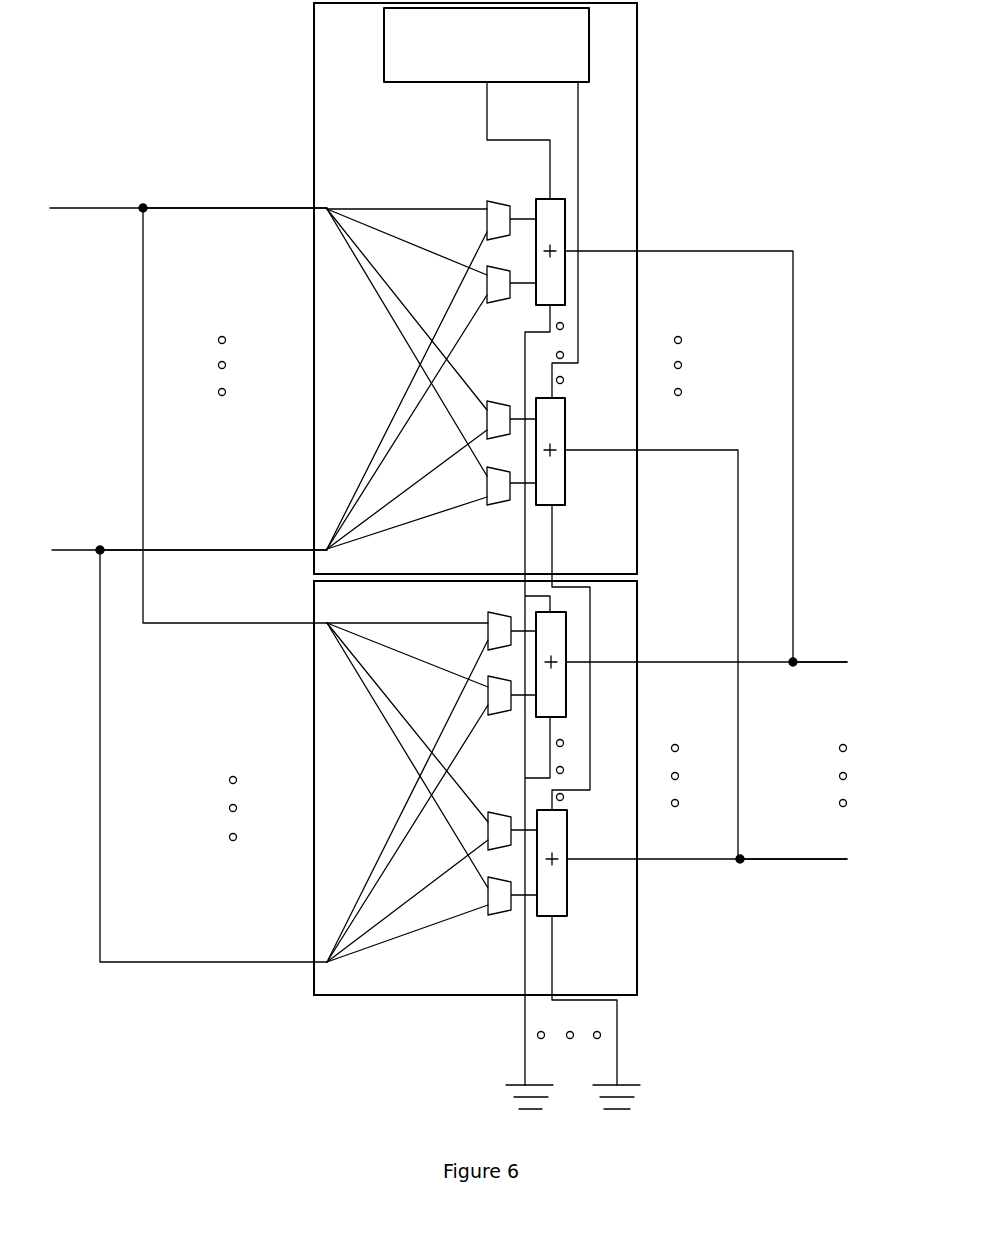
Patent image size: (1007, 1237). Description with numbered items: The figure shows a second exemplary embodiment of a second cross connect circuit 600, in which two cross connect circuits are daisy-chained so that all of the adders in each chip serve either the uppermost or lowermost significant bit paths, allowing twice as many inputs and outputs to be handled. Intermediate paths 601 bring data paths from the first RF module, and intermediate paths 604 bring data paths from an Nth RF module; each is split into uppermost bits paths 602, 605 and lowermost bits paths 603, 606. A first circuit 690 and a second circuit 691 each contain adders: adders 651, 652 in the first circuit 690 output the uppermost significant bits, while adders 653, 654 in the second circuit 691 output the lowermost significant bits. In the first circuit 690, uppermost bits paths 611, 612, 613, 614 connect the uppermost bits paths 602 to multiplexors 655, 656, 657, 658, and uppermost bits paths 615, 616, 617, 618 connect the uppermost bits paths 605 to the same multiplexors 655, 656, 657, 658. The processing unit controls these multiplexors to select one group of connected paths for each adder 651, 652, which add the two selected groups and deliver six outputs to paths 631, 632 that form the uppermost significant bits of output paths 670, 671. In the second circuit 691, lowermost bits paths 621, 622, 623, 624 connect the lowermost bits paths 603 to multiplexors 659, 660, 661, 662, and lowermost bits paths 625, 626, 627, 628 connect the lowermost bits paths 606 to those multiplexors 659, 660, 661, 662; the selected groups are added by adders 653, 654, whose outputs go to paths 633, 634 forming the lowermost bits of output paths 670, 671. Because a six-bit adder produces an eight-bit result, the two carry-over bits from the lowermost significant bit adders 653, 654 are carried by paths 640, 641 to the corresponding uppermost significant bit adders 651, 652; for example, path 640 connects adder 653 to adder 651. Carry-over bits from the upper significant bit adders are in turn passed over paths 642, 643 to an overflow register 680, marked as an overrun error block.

The second cross connect circuit 600 is at (689, 90).
The intermediate paths 601 is at (115, 206).
The uppermost bits paths 602 is at (243, 206).
The lowermost bits paths 603 is at (145, 322).
The intermediate paths 604 is at (82, 548).
The uppermost bits paths 605 is at (228, 548).
The lowermost bits paths 606 is at (100, 713).
The uppermost bits path 611 is at (445, 206).
The uppermost bits path 612 is at (438, 256).
The uppermost bits path 613 is at (408, 312).
The uppermost bits path 614 is at (373, 290).
The uppermost bits path 615 is at (402, 388).
The uppermost bits path 616 is at (443, 440).
The uppermost bits path 617 is at (456, 483).
The uppermost bits path 618 is at (410, 533).
The lowermost bits path 621 is at (437, 620).
The lowermost bits path 622 is at (438, 670).
The lowermost bits path 623 is at (410, 724).
The lowermost bits path 624 is at (373, 705).
The lowermost bits path 625 is at (402, 808).
The lowermost bits path 626 is at (455, 838).
The lowermost bits path 627 is at (462, 875).
The lowermost bits path 628 is at (410, 945).
The path 631 is at (757, 250).
The path 632 is at (725, 450).
The path 633 is at (710, 660).
The path 634 is at (710, 858).
The path 640 is at (525, 550).
The path 641 is at (553, 547).
The path 642 is at (578, 95).
The path 643 is at (487, 100).
The adder 651 is at (567, 230).
The adder 652 is at (567, 430).
The adder 653 is at (567, 618).
The adder 654 is at (568, 845).
The multiplexor 655 is at (495, 201).
The multiplexor 656 is at (502, 303).
The multiplexor 657 is at (498, 401).
The multiplexor 658 is at (503, 505).
The multiplexor 659 is at (490, 612).
The multiplexor 660 is at (505, 715).
The multiplexor 661 is at (500, 812).
The multiplexor 662 is at (505, 915).
The output path 670 is at (820, 660).
The output path 671 is at (820, 858).
The overflow register 680 is at (486, 45).
The first circuit 690 is at (637, 160).
The second circuit 691 is at (637, 962).